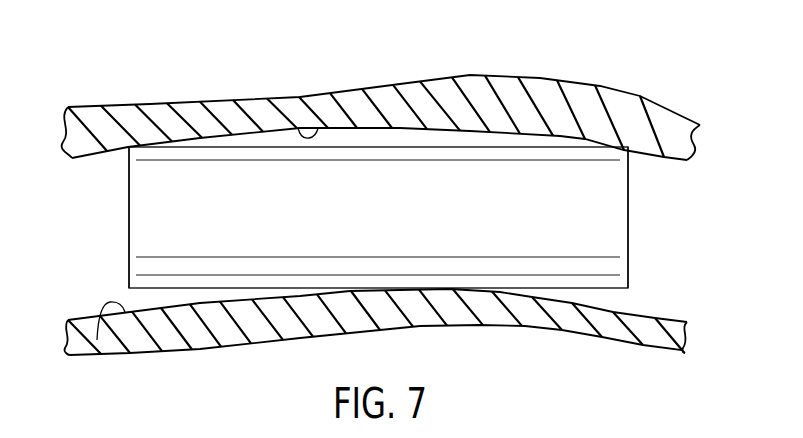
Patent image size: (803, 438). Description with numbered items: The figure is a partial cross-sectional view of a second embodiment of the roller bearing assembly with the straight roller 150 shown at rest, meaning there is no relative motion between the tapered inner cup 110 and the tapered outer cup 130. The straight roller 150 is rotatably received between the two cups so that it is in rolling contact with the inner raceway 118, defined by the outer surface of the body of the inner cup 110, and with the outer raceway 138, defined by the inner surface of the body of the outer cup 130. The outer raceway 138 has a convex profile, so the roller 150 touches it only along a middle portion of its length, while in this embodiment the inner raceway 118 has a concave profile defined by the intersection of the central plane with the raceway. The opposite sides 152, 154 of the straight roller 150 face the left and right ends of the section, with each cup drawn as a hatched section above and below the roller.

The tapered inner cup 110 is at (540, 58).
The inner raceway 118 is at (298, 128).
The tapered outer cup 130 is at (564, 347).
The outer raceway 138 is at (97, 340).
The straight roller 150 is at (397, 227).
The first side of insert 152 is at (128, 214).
The second side of insert 154 is at (628, 217).